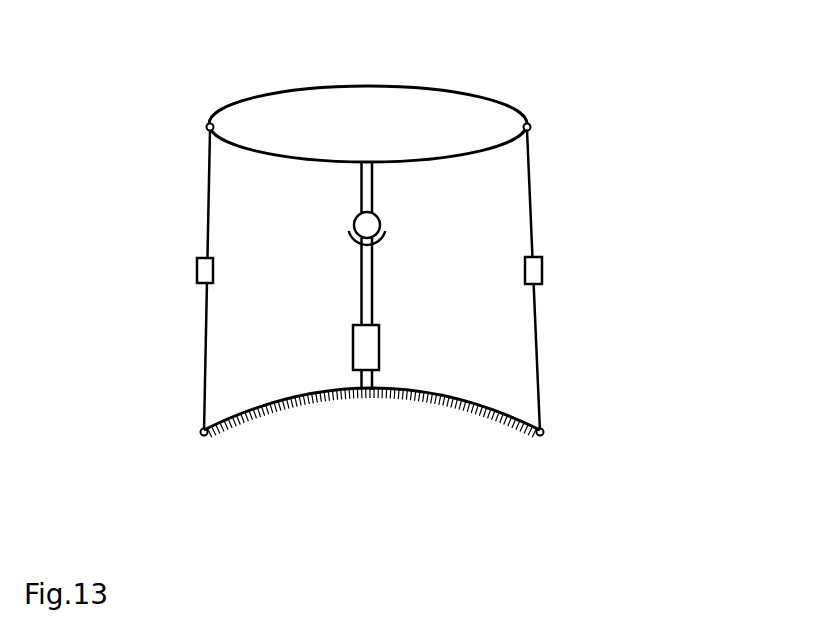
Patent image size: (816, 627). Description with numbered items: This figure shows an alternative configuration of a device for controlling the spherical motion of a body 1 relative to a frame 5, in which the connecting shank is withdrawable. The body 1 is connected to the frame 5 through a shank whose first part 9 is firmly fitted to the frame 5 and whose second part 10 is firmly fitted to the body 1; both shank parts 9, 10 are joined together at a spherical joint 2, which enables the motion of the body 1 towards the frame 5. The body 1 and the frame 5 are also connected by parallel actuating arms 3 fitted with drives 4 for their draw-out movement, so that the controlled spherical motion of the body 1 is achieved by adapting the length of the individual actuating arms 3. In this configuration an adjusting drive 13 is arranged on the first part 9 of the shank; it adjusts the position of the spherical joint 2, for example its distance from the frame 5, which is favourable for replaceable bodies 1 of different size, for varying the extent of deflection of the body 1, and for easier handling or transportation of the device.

The body 1 is at (460, 102).
The spherical joint 2 is at (352, 215).
The parallel actuating arms 3 is at (533, 238).
The drives 4 is at (196, 265).
The frame 5 is at (272, 400).
The first part of the shank 9 is at (375, 263).
The second part of the shank 10 is at (375, 195).
The adjusting drive 13 is at (372, 352).